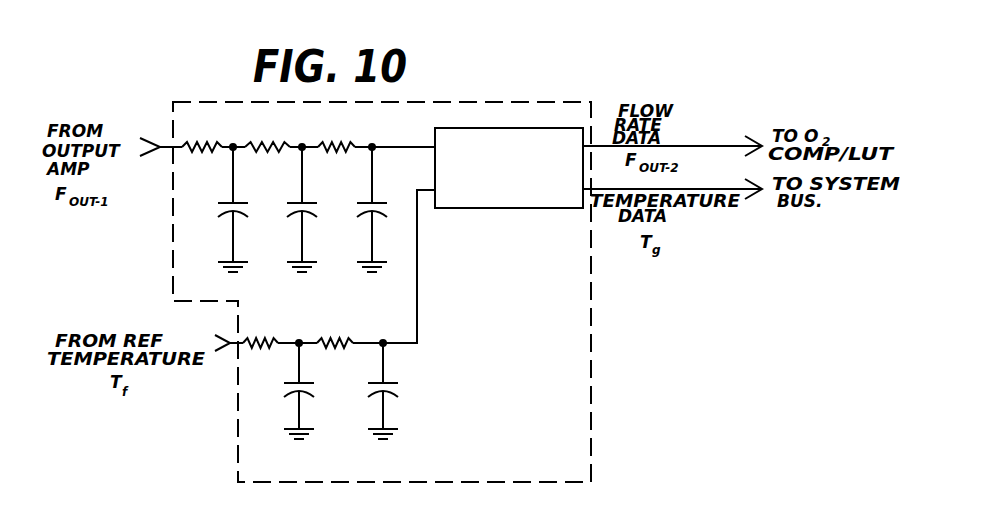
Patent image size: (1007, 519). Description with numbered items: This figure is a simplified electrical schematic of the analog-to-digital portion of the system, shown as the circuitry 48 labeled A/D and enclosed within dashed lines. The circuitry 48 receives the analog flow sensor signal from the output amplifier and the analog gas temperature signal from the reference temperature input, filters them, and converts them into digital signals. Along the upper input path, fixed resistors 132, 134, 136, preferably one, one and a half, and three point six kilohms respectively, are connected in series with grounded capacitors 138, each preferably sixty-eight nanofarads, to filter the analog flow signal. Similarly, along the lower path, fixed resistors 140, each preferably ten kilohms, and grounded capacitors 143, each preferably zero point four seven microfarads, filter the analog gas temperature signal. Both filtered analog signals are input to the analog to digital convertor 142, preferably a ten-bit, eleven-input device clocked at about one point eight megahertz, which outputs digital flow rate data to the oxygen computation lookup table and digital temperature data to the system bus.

The A/D circuitry 48 is at (517, 102).
The fixed resistor 132 is at (201, 142).
The fixed resistor 134 is at (271, 142).
The fixed resistor 136 is at (350, 142).
The capacitors 138 is at (236, 201).
The fixed resistors 140 is at (336, 341).
The analog to digital convertor 142 is at (512, 201).
The capacitors 143 is at (379, 382).